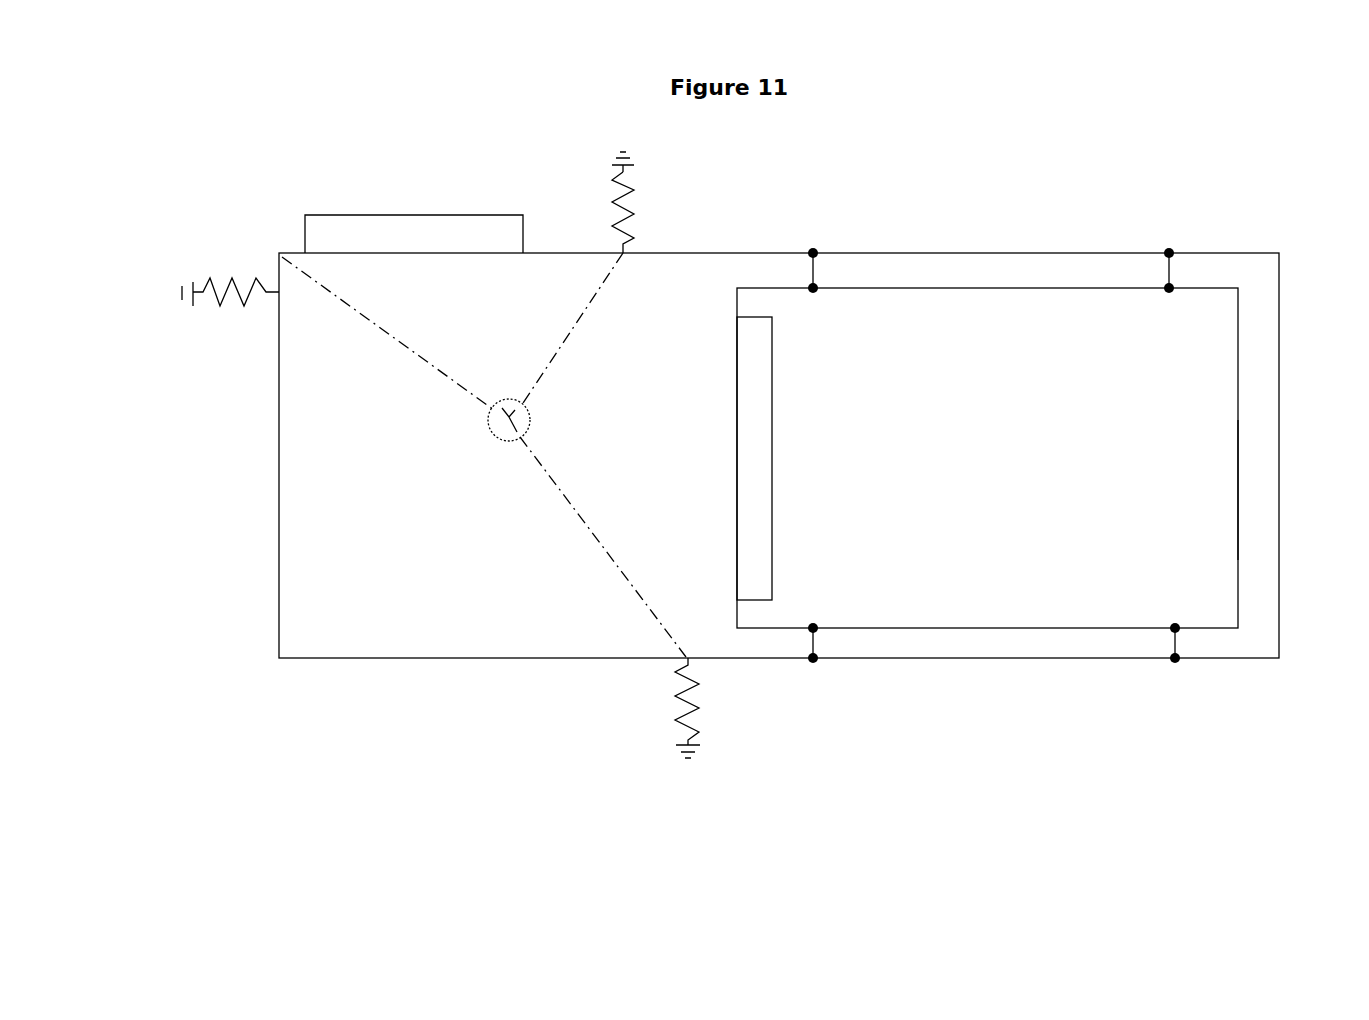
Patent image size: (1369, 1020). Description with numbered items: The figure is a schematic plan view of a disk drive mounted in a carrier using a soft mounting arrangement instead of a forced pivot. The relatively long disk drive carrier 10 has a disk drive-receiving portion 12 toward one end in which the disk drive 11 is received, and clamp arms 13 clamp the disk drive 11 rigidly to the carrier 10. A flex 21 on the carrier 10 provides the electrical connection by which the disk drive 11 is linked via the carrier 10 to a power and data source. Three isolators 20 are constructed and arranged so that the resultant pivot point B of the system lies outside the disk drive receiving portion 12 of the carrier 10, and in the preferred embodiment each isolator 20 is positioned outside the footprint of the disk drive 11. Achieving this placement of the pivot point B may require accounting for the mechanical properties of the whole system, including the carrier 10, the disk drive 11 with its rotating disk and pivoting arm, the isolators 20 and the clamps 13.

The disk drive carrier 10 is at (1005, 252).
The disk drive 11 is at (1240, 357).
The disk drive-receiving portion 12 is at (1240, 497).
The clamp arms 13 is at (1173, 270).
The isolators 20 is at (237, 277).
The flex 21 is at (399, 214).
The resultant pivot point B is at (494, 431).